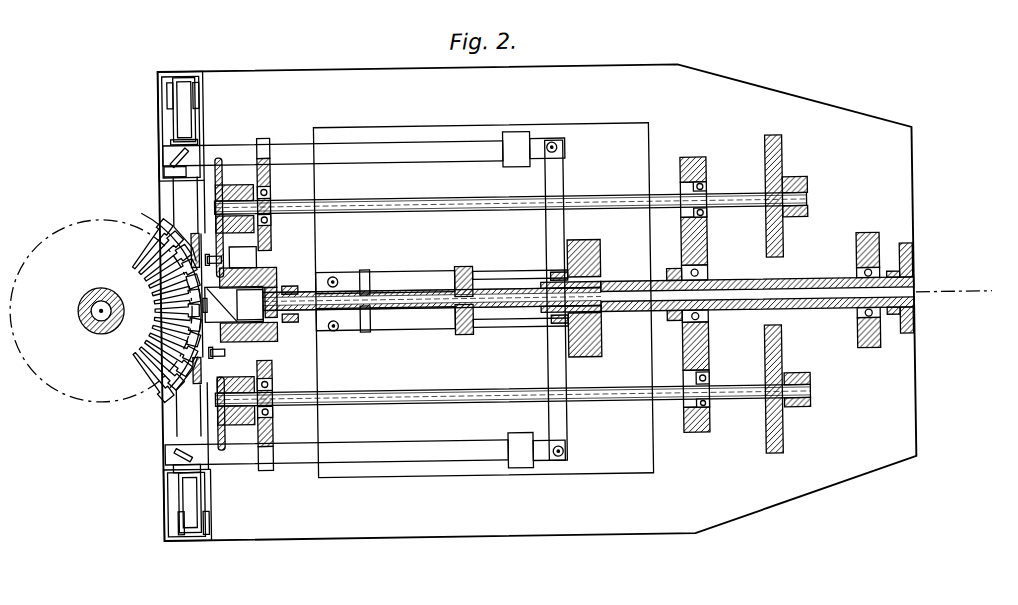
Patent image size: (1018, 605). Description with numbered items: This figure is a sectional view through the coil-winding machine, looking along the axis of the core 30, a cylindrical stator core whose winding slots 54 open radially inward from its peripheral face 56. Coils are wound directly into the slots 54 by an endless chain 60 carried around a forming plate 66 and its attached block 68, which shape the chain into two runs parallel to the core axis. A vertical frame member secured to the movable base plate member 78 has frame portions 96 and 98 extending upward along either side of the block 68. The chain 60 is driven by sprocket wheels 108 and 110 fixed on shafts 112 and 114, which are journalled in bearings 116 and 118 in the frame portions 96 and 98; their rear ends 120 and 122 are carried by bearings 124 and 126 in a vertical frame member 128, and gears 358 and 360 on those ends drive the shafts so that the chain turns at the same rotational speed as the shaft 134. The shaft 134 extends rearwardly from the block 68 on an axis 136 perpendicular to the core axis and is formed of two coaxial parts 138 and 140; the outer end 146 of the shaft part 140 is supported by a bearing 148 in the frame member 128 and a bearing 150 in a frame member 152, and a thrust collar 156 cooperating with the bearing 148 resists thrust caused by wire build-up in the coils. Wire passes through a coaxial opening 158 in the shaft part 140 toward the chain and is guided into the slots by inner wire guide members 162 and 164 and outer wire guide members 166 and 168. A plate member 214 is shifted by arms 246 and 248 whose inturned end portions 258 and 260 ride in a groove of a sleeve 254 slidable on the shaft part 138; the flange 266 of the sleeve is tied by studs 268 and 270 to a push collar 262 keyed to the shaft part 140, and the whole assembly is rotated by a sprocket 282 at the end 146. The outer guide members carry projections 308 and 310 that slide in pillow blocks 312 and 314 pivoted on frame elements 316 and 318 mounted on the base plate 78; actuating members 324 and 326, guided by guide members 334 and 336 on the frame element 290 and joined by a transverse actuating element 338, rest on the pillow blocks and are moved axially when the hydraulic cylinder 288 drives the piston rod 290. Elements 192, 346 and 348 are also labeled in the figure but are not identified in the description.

The core 30 is at (66, 197).
The winding slots 54 is at (158, 348).
The peripheral face 56 is at (98, 200).
The endless chain 60 is at (208, 302).
The forming plate 66 is at (245, 260).
The block 68 is at (265, 266).
The movable base plate member 78 is at (770, 86).
The frame portion 96 is at (272, 174).
The frame portion 98 is at (272, 430).
The sprocket wheel 108 is at (224, 176).
The sprocket wheel 110 is at (226, 424).
The shaft 112 is at (422, 196).
The shaft 114 is at (388, 388).
The bearing 116 is at (271, 192).
The bearing 118 is at (270, 380).
The rear end 120 is at (738, 194).
The rear end 122 is at (744, 400).
The bearing 124 is at (706, 182).
The bearing 126 is at (708, 378).
The frame member 128 is at (682, 165).
The shaft 134 is at (612, 268).
The axis 136 is at (970, 288).
The shaft part 138 is at (490, 302).
The shaft part 140 is at (738, 284).
The outer end 146 is at (882, 271).
The bearing 148 is at (708, 272).
The bearing 150 is at (882, 318).
The frame member 152 is at (857, 338).
The thrust collar 156 is at (672, 322).
The coaxial opening 158 is at (790, 284).
The inner wire guide member 162 is at (212, 250).
The inner wire guide member 164 is at (214, 358).
The outer wire guide member 166 is at (160, 218).
The outer wire guide member 168 is at (165, 385).
The bearing 192 is at (272, 315).
The plate member 214 is at (222, 292).
The arm 246 is at (258, 268).
The arm 248 is at (252, 338).
The sleeve 254 is at (425, 268).
The inturned end portion 258 is at (290, 283).
The inturned end portion 260 is at (292, 319).
The push collar 262 is at (600, 242).
The flange 266 is at (466, 265).
The stud 268 is at (508, 270).
The stud 270 is at (512, 326).
The sprocket 282 is at (912, 262).
The hydraulic cylinder 288 is at (396, 270).
The piston rod 290 is at (650, 470).
The projection 308 is at (190, 108).
The projection 310 is at (196, 484).
The pillow block 312 is at (160, 163).
The pillow block 314 is at (172, 461).
The frame element 316 is at (163, 92).
The frame element 318 is at (163, 492).
The actuating member 324 is at (422, 135).
The actuating member 326 is at (408, 440).
The guide member 334 is at (515, 130).
The guide member 336 is at (520, 468).
The transverse actuating element 338 is at (566, 414).
The upper bracket 346 is at (185, 72).
The lower bracket 348 is at (204, 532).
The gear 358 is at (784, 160).
The gear 360 is at (782, 418).